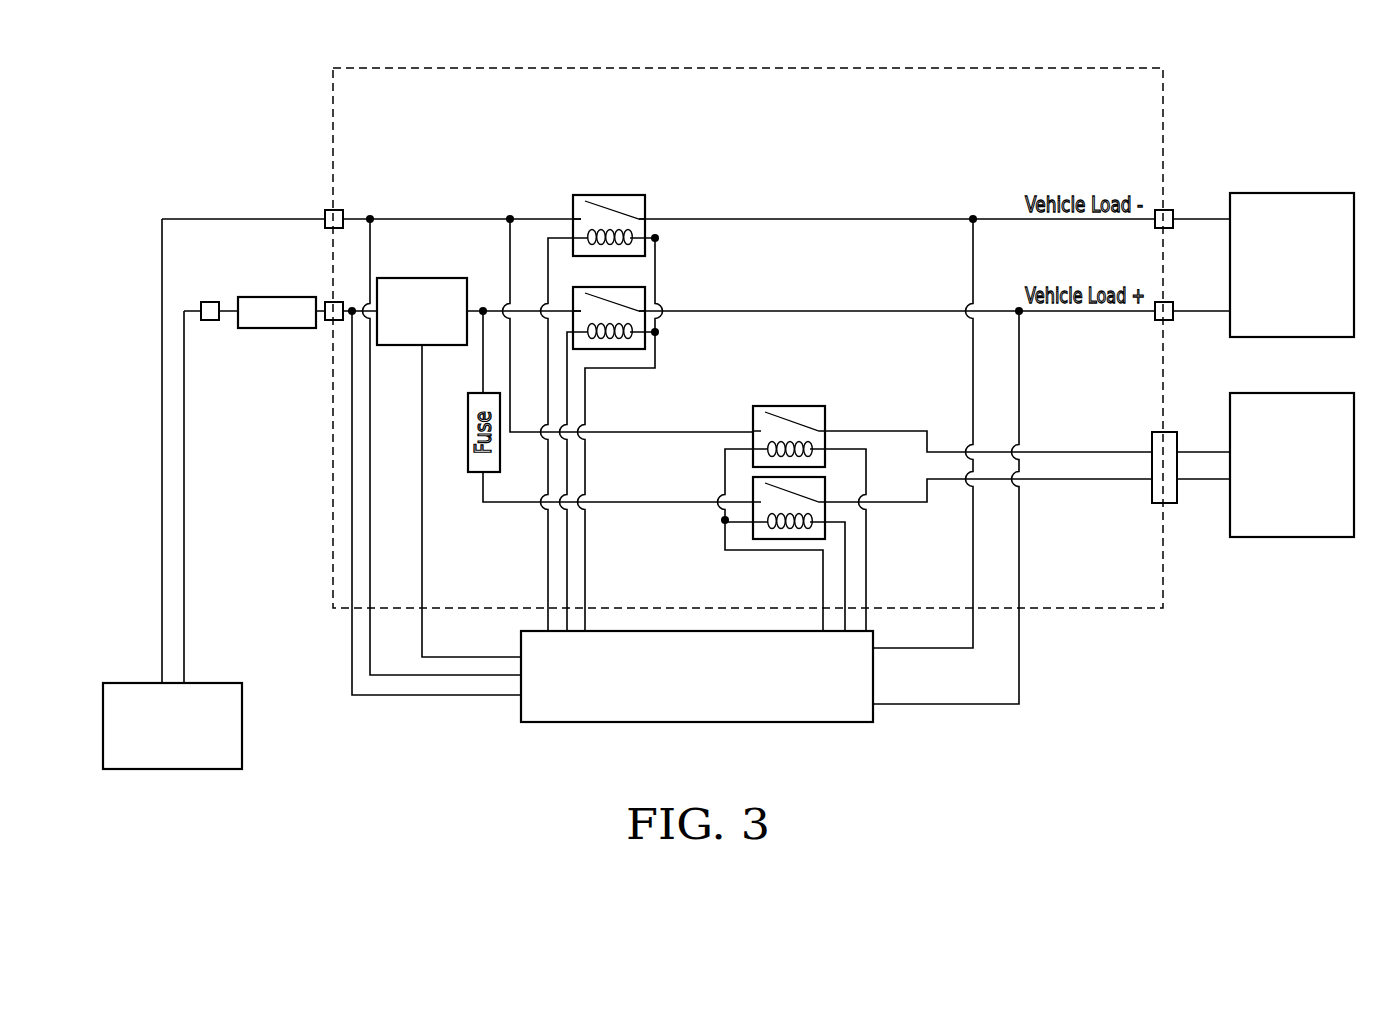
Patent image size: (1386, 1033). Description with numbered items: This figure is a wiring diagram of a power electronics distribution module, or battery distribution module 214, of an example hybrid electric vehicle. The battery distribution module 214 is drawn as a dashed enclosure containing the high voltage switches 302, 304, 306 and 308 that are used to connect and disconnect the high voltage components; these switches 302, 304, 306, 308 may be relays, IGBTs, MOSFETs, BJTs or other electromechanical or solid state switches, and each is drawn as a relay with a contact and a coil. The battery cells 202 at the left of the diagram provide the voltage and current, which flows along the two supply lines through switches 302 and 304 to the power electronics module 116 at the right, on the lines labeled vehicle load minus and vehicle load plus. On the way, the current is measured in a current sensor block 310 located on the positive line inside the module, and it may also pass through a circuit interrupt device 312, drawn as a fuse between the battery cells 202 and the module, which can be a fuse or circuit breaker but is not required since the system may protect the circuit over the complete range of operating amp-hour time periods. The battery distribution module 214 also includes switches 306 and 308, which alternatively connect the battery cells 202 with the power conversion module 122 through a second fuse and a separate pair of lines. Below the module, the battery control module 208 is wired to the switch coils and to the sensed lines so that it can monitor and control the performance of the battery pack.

The battery distribution module 214 is at (775, 68).
The power electronics module 116 is at (1291, 193).
The power conversion module 122 is at (1291, 393).
The high voltage switch 302 is at (647, 246).
The high voltage switch 304 is at (647, 340).
The high voltage switch 306 is at (790, 406).
The high voltage switch 308 is at (790, 539).
The current sensor block 310 is at (445, 278).
The circuit interrupt device 312 is at (290, 297).
The battery control module 208 is at (697, 722).
The battery cells 202 is at (170, 769).